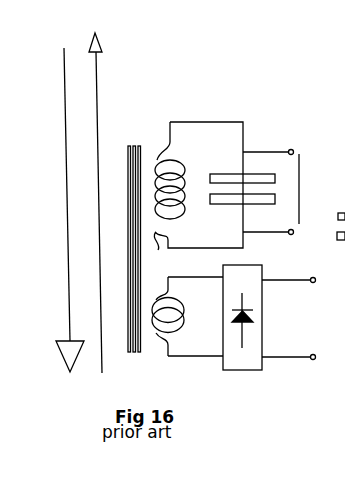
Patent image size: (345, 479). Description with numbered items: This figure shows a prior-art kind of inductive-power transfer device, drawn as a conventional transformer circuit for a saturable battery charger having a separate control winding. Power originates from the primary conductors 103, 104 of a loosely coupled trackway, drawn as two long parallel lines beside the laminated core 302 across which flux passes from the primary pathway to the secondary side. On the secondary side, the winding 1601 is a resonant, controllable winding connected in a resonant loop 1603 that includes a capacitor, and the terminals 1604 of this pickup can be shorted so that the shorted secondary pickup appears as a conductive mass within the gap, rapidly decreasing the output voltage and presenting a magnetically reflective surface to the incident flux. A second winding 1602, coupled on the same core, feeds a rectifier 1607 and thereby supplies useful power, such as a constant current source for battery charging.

The primary conductor 103 is at (66, 53).
The primary conductor 104 is at (100, 58).
The transformer core 302 is at (131, 146).
The resonant controllable winding 1601 is at (152, 243).
The secondary winding 1602 is at (151, 336).
The primary resonant circuit 1603 is at (226, 176).
The shorted secondary pickup 1604 is at (308, 131).
The rectifier diode 1607 is at (269, 333).